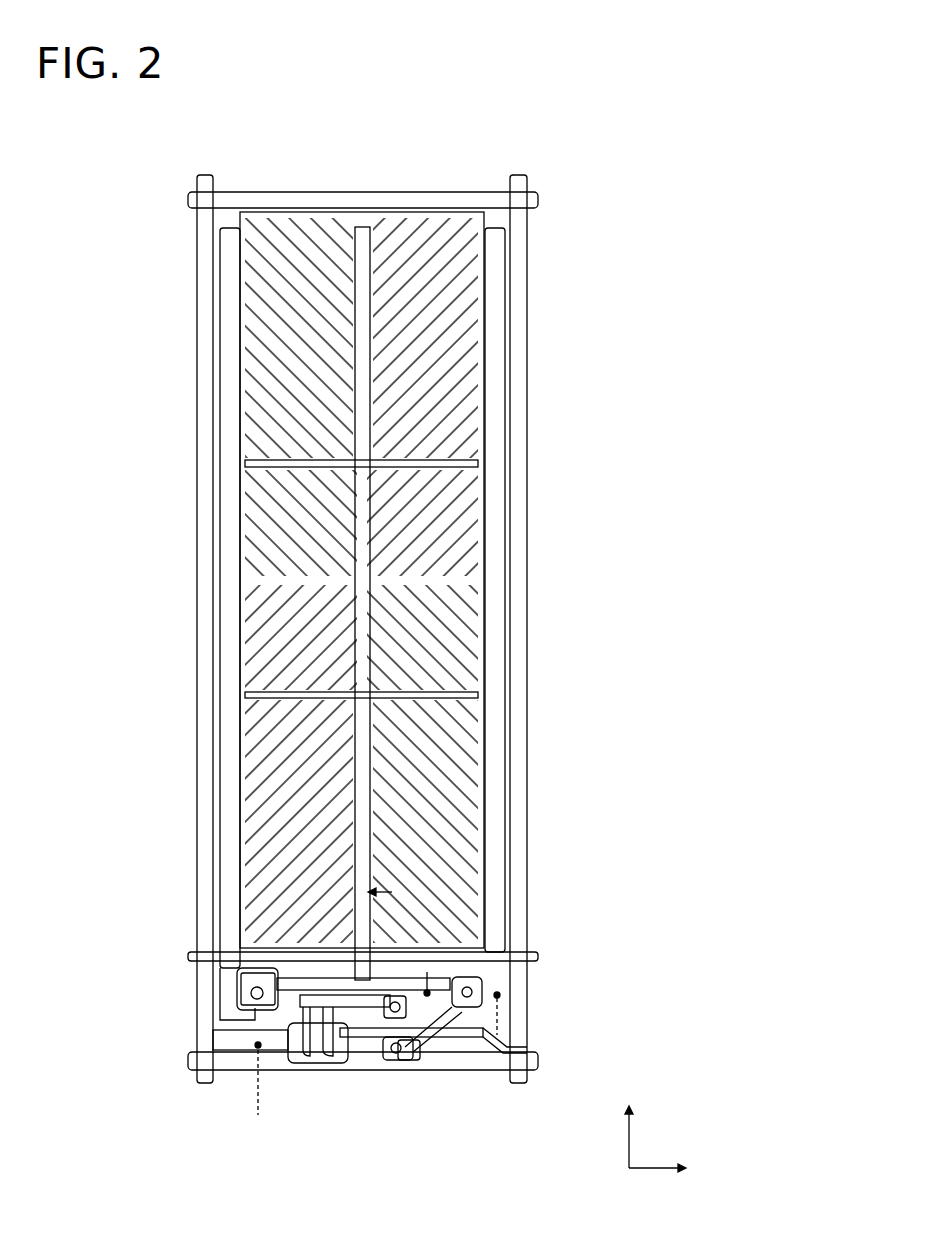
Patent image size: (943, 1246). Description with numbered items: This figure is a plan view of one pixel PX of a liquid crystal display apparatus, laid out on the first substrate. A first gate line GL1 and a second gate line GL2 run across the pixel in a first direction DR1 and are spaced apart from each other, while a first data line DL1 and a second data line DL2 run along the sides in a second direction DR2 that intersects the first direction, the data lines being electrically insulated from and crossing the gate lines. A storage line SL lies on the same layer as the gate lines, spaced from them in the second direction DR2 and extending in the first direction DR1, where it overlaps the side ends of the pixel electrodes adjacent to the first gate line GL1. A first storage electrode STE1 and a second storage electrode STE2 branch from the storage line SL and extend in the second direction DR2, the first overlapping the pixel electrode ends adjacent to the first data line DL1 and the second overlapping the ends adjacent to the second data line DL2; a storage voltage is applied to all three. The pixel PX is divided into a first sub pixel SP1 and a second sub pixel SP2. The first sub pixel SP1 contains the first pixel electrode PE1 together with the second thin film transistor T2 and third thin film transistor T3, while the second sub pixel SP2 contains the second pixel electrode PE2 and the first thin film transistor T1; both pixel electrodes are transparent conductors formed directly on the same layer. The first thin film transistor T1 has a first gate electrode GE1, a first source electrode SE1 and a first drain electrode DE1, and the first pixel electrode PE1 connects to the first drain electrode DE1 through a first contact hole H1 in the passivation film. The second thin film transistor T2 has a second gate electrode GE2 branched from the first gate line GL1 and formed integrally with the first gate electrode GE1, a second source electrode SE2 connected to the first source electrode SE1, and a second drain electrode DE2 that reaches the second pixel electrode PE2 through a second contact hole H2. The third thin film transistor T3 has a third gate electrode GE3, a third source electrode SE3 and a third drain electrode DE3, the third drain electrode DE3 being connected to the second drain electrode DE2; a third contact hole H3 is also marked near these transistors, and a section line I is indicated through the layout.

The pixel PX is at (577, 113).
The first data line DL1 is at (206, 185).
The second data line DL2 is at (519, 185).
The first gate line GL1 is at (190, 1061).
The second gate line GL2 is at (190, 200).
The storage line SL is at (530, 957).
The first storage electrode STE1 is at (225, 780).
The second storage electrode STE2 is at (500, 748).
The first pixel electrode PE1 is at (484, 213).
The second pixel electrode PE2 is at (478, 470).
The first sub pixel SP1 is at (252, 447).
The second sub pixel SP2 is at (256, 592).
The first contact hole H1 is at (240, 992).
The second contact hole H2 is at (392, 990).
The third contact hole H3 is at (483, 992).
The first thin film transistor T1 is at (303, 1140).
The second thin film transistor T2 is at (410, 1140).
The third thin film transistor T3 is at (520, 1140).
The first gate electrode GE1 is at (240, 1075).
The first source electrode SE1 is at (300, 1075).
The first drain electrode DE1 is at (315, 1075).
The second gate electrode GE2 is at (405, 1075).
The second source electrode SE2 is at (385, 1075).
The second drain electrode DE2 is at (345, 1075).
The third gate electrode GE3 is at (440, 1075).
The third source electrode SE3 is at (505, 1075).
The third drain electrode DE3 is at (470, 1075).
The section line I-I' I is at (434, 959).
The first direction DR1 is at (673, 1171).
The second direction DR2 is at (626, 1128).